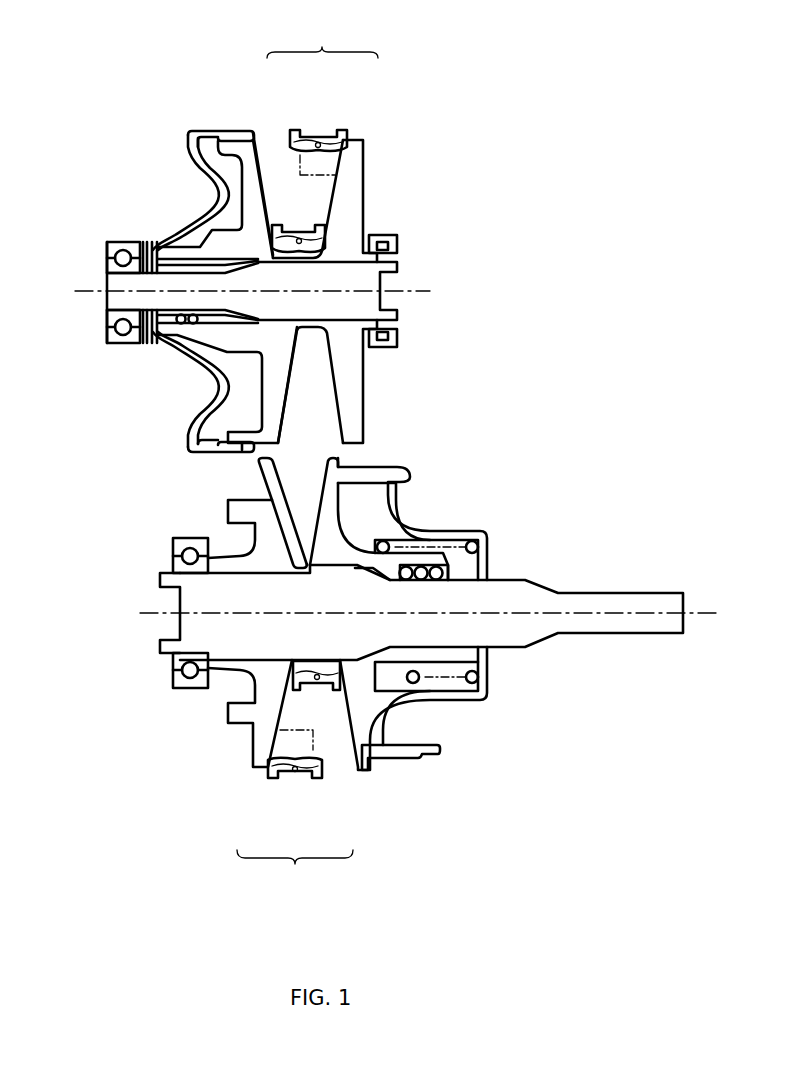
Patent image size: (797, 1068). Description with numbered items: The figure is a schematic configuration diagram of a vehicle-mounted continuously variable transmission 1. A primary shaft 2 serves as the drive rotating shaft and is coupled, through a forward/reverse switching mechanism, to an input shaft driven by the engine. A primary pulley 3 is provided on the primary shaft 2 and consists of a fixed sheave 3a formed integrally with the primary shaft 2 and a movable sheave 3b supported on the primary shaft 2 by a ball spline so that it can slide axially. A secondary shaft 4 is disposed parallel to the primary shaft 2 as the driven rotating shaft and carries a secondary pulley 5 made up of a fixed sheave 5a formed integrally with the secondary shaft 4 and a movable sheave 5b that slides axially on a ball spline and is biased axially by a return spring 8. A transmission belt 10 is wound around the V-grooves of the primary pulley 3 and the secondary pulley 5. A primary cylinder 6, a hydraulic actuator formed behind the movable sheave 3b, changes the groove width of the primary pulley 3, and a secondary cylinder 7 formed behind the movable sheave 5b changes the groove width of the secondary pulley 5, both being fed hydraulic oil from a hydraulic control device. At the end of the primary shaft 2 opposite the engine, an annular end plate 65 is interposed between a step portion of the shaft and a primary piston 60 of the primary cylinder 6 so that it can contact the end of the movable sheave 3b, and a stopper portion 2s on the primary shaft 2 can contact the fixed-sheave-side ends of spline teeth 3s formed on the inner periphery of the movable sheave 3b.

The continuously variable transmission 1 is at (480, 381).
The primary shaft 2 is at (113, 285).
The stopper portion 2s is at (249, 170).
The primary pulley 3 is at (322, 98).
The fixed sheave 3a is at (347, 163).
The movable sheave 3b is at (252, 172).
The spline teeth 3s is at (253, 262).
The secondary shaft 4 is at (527, 600).
The secondary pulley 5 is at (295, 810).
The fixed sheave 5a is at (256, 752).
The movable sheave 5b is at (365, 737).
The primary cylinder 6 is at (197, 207).
The primary piston 60 is at (213, 393).
The annular end plate 65 is at (150, 247).
The secondary cylinder 7 is at (417, 710).
The return spring 8 is at (473, 547).
The transmission belt 10 is at (328, 238).